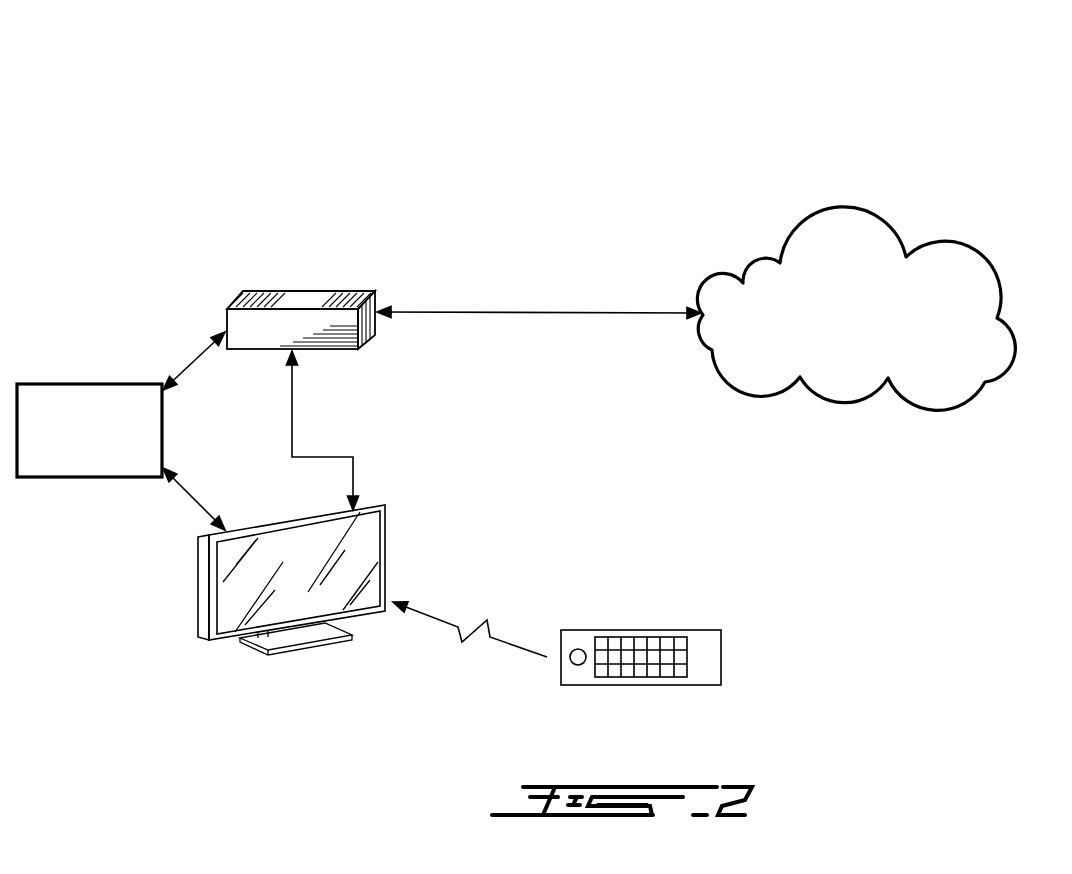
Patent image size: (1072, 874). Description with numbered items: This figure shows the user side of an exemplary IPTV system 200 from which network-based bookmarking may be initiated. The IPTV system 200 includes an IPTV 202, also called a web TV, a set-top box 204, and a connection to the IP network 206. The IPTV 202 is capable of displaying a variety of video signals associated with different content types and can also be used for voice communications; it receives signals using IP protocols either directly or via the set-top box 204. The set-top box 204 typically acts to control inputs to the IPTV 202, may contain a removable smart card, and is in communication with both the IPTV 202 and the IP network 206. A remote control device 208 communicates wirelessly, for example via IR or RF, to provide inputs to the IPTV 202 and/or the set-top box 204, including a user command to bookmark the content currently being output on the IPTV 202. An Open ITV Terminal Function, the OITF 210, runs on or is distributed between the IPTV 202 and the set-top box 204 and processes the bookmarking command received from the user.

The IPTV system 200 is at (283, 141).
The IPTV 202 is at (247, 645).
The set-top box 204 is at (236, 300).
The IP network 206 is at (993, 265).
The remote control device 208 is at (647, 630).
The Open ITV Terminal Function (OITF) 210 is at (97, 478).